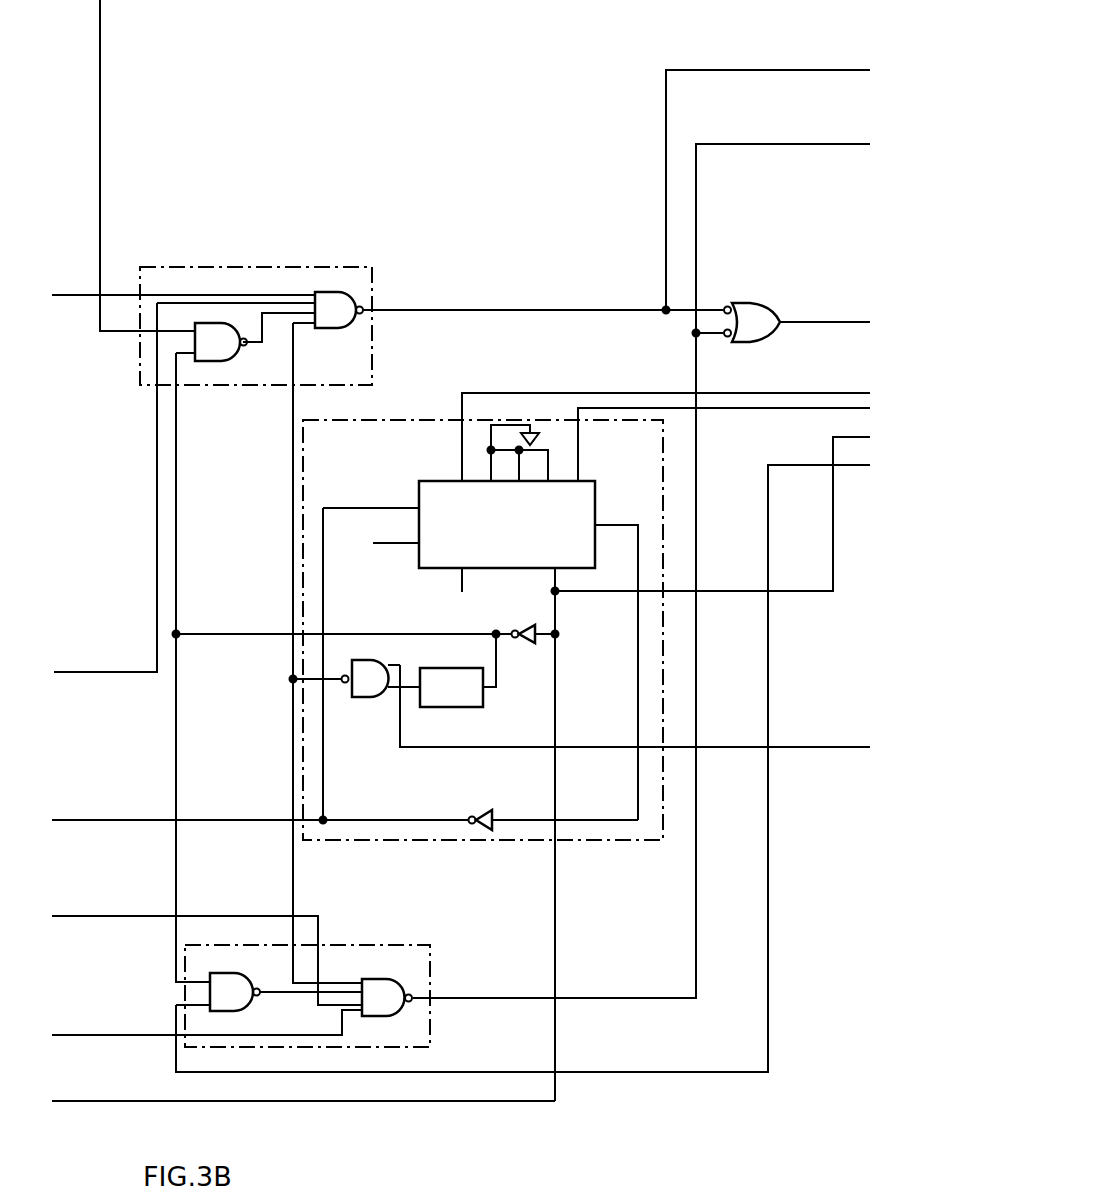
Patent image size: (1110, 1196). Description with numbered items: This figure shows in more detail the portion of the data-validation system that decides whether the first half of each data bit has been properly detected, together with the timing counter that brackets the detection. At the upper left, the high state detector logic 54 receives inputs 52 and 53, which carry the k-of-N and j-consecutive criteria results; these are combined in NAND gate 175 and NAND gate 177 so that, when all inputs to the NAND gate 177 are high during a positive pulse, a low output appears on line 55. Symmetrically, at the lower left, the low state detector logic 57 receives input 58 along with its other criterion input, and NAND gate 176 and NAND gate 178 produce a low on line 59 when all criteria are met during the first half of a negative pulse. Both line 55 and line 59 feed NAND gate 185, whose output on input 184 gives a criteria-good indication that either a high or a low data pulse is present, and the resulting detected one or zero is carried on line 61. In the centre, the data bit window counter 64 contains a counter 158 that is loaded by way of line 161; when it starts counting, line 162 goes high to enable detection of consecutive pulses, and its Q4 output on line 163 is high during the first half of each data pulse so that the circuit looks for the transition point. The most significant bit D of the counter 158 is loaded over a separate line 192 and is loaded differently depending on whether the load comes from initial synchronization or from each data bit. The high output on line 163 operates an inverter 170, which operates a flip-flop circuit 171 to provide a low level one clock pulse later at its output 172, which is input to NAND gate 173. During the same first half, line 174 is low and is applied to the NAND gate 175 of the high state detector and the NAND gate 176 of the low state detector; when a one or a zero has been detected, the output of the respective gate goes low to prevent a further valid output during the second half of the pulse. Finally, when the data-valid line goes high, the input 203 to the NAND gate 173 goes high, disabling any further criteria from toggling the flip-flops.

The input 52 is at (84, 295).
The input 53 is at (157, 424).
The high state detector logic 54 is at (270, 267).
The line 55 is at (446, 310).
The low state detector logic 57 is at (411, 945).
The input 58 is at (82, 1035).
The line 59 is at (830, 146).
The line 61 is at (834, 0).
The data bit window counter 64 is at (402, 420).
The counter 158 is at (598, 500).
The line 161 is at (462, 434).
The line 162 is at (150, 818).
The line 163 is at (68, 1101).
The inverter 170 is at (521, 625).
The flip-flop circuit 171 is at (485, 704).
The output 172 is at (410, 690).
The NAND gate 173 is at (370, 698).
The line 174 is at (176, 748).
The NAND gate 175 is at (222, 361).
The NAND gate 176 is at (248, 1011).
The NAND gate 177 is at (342, 328).
The NAND gate 178 is at (370, 979).
The input 184 is at (830, 322).
The NAND gate 185 is at (745, 303).
The line 192 is at (582, 457).
The input 203 is at (830, 748).